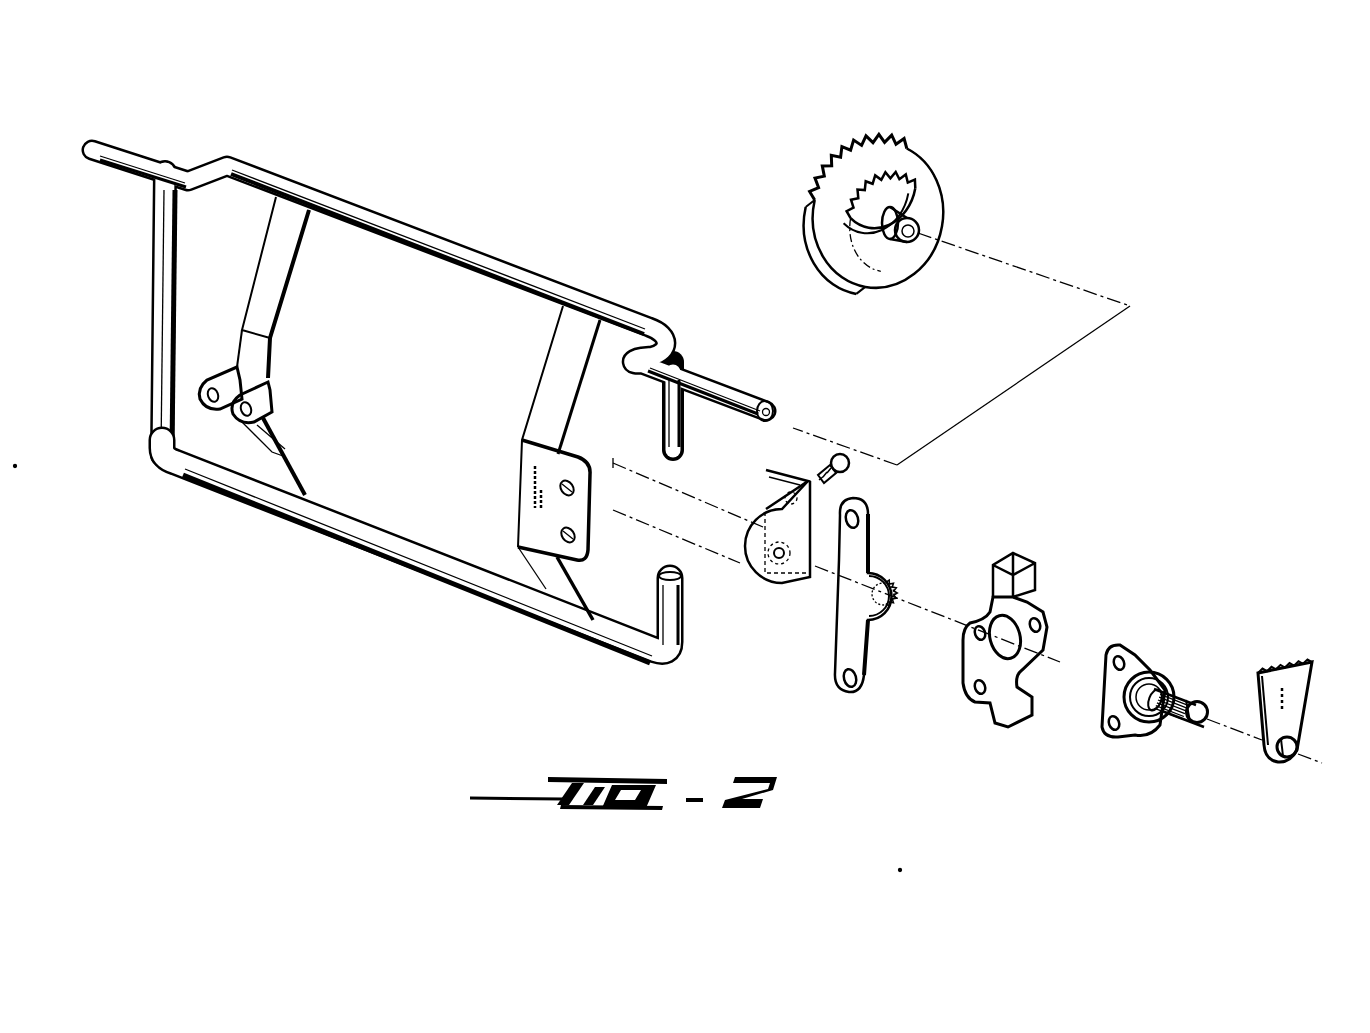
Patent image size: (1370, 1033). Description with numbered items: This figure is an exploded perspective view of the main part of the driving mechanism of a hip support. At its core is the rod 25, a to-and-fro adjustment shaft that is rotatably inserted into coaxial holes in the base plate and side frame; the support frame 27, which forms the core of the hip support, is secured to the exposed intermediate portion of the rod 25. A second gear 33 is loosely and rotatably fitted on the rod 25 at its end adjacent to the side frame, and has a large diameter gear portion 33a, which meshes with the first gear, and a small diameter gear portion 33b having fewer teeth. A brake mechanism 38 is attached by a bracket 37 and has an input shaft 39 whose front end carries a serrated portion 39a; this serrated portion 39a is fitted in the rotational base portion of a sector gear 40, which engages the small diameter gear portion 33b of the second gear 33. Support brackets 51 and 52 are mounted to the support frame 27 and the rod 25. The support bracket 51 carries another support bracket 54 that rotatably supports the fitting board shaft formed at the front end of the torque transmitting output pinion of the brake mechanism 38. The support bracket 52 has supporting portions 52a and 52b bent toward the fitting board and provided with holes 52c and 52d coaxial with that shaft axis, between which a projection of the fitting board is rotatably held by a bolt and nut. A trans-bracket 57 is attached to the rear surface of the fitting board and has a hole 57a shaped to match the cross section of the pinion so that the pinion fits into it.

The rod 25 is at (557, 282).
The support frame 27 is at (325, 528).
The support bracket 51 is at (553, 583).
The support bracket 52 is at (250, 373).
The supporting portion 52a is at (199, 410).
The supporting portion 52b is at (285, 457).
The hole 52c is at (210, 410).
The hole 52d is at (240, 425).
The support bracket 54 is at (780, 584).
The trans-bracket 57 is at (879, 595).
The hole 57a is at (895, 613).
The bracket 37 is at (1036, 564).
The brake mechanism 38 is at (1140, 665).
The input shaft 39 is at (1183, 716).
The serrated portion 39a is at (1184, 693).
The sector gear 40 is at (1307, 677).
The second gear 33 is at (928, 189).
The large diameter gear portion 33a is at (876, 140).
The small diameter gear portion 33b is at (902, 176).